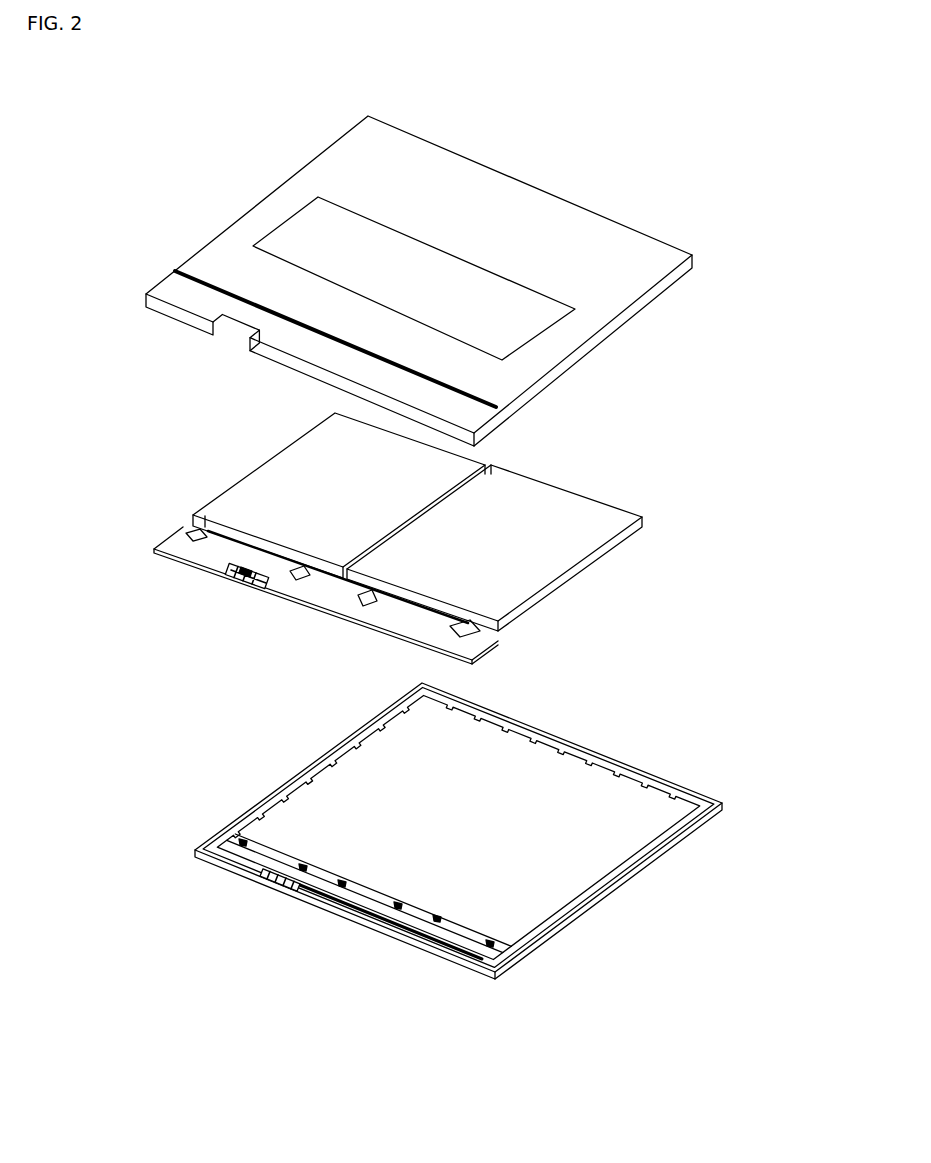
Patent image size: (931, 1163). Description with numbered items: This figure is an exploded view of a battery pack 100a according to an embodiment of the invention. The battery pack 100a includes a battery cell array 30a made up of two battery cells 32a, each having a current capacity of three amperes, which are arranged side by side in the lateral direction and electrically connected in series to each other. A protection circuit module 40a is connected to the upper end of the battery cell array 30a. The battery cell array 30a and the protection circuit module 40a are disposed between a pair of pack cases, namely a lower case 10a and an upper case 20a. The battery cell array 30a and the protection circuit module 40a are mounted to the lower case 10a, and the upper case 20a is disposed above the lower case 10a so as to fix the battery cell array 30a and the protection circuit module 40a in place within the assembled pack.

The battery pack 100a is at (114, 178).
The upper case 20a is at (651, 225).
The battery cell array 30a is at (487, 522).
The battery cell 32a is at (497, 482).
The protection circuit module 40a is at (196, 586).
The lower case 10a is at (720, 777).